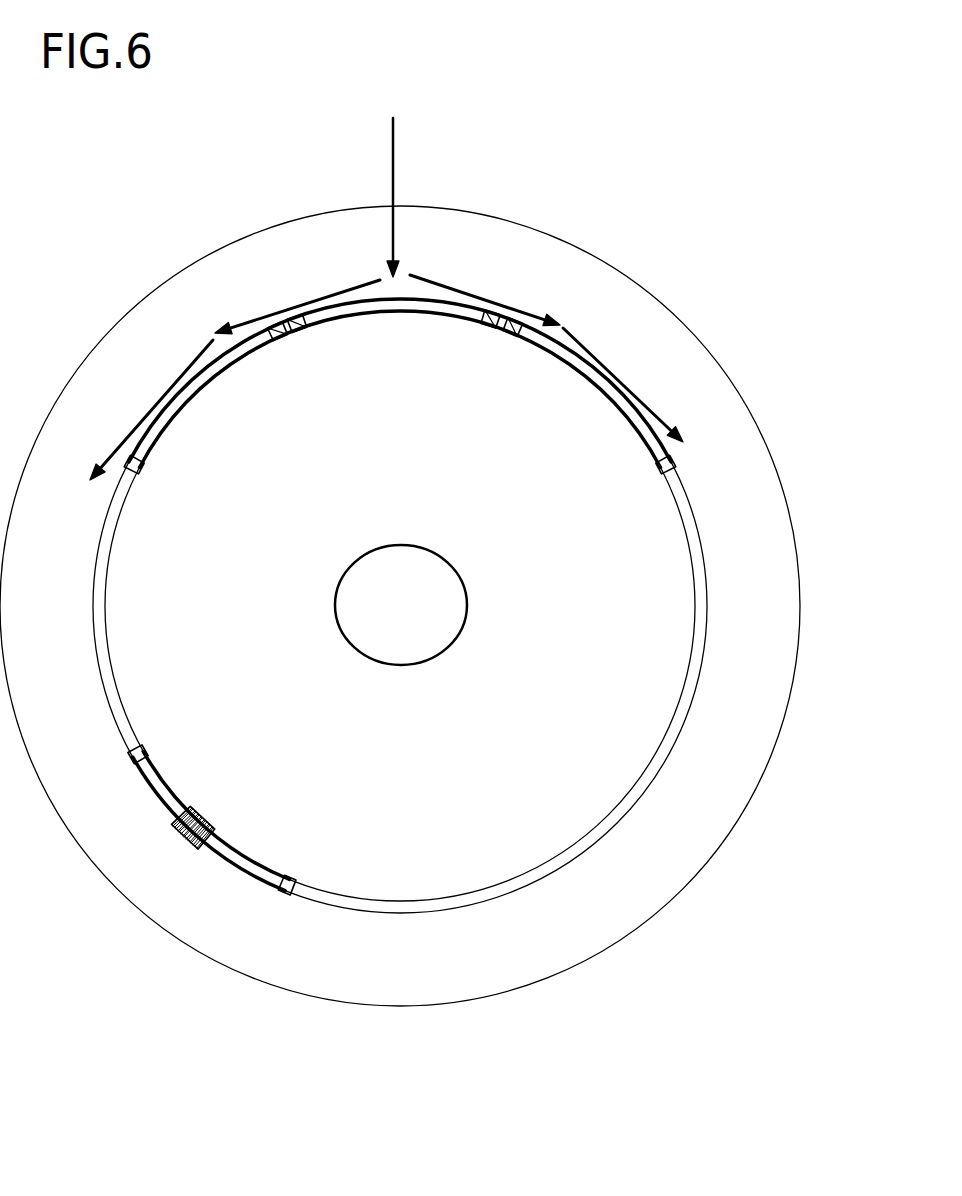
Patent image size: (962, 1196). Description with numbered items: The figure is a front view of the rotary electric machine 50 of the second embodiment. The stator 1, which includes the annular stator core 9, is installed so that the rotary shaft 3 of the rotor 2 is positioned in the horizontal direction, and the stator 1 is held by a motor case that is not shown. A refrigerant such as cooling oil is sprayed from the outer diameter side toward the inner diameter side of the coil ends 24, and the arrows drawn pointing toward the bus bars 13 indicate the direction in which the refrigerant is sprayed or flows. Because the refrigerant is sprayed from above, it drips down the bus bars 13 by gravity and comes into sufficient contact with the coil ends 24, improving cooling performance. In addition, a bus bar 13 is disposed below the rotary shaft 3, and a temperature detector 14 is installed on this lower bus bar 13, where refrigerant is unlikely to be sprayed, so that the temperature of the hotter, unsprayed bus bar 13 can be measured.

The rotary electric machine 50 is at (404, 574).
The stator 1 is at (633, 277).
The coil ends 24 is at (727, 398).
The stator core 9 is at (687, 497).
The rotor 2 is at (580, 720).
The rotary shaft 3 is at (433, 637).
The bus bar 13 is at (547, 352).
The temperature detector 14 is at (203, 808).